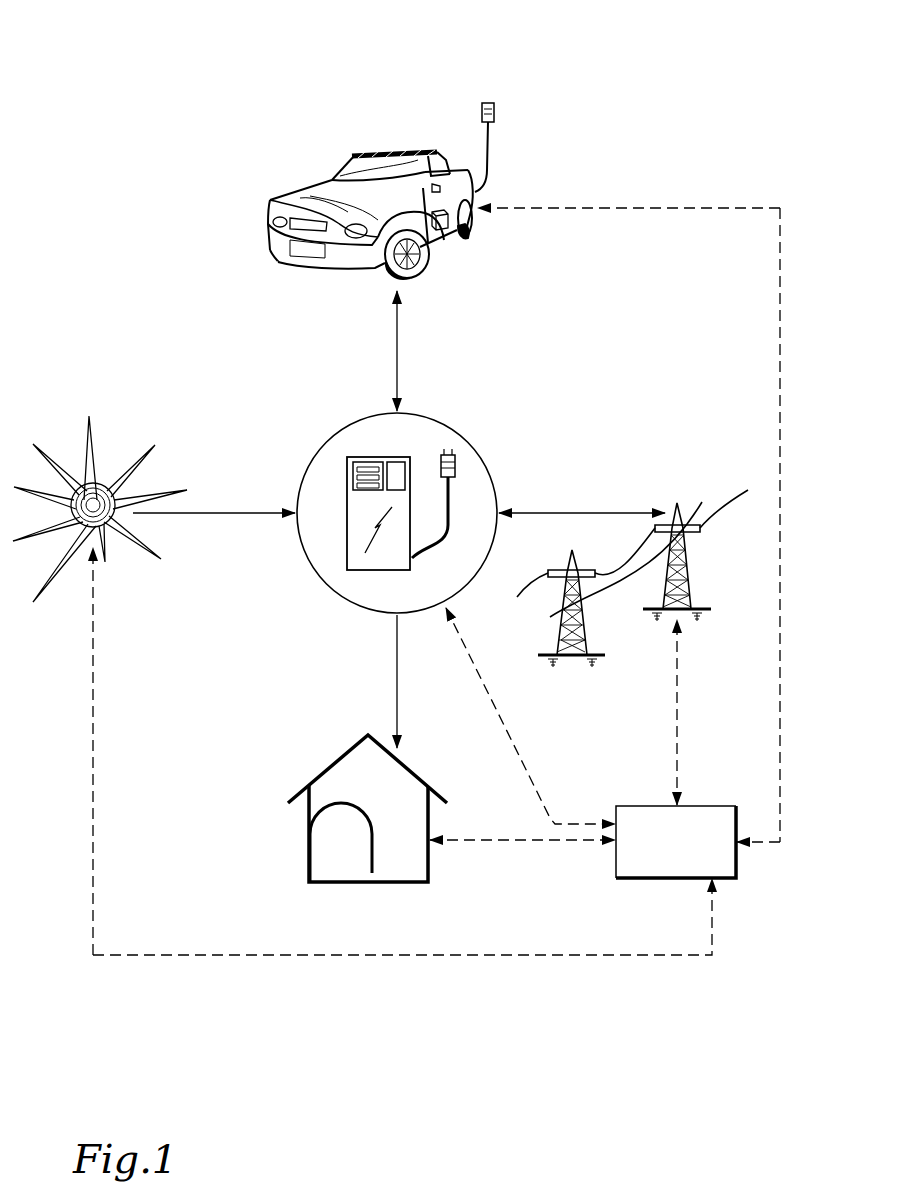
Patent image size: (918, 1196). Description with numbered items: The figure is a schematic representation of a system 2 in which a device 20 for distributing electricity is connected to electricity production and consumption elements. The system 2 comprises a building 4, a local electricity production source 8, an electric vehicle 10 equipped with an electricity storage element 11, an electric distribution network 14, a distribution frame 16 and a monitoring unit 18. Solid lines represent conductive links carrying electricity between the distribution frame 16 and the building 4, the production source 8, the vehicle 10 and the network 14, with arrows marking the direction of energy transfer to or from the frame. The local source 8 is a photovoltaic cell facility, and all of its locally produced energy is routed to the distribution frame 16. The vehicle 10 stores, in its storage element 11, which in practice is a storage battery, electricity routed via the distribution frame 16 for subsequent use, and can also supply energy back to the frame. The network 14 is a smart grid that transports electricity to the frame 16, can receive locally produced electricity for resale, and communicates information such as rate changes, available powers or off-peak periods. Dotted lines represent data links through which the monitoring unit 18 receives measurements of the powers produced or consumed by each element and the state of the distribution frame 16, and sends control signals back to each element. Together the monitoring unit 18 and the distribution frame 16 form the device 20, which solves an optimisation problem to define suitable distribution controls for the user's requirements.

The system 2 is at (593, 97).
The building 4 is at (271, 822).
The local electricity production source 8 is at (123, 445).
The electric vehicle 10 is at (251, 182).
The electricity storage element 11 is at (438, 230).
The electric distribution network 14 is at (703, 577).
The distribution frame 16 is at (418, 594).
The monitoring unit 18 is at (660, 850).
The device for distributing electricity 20 is at (590, 1015).